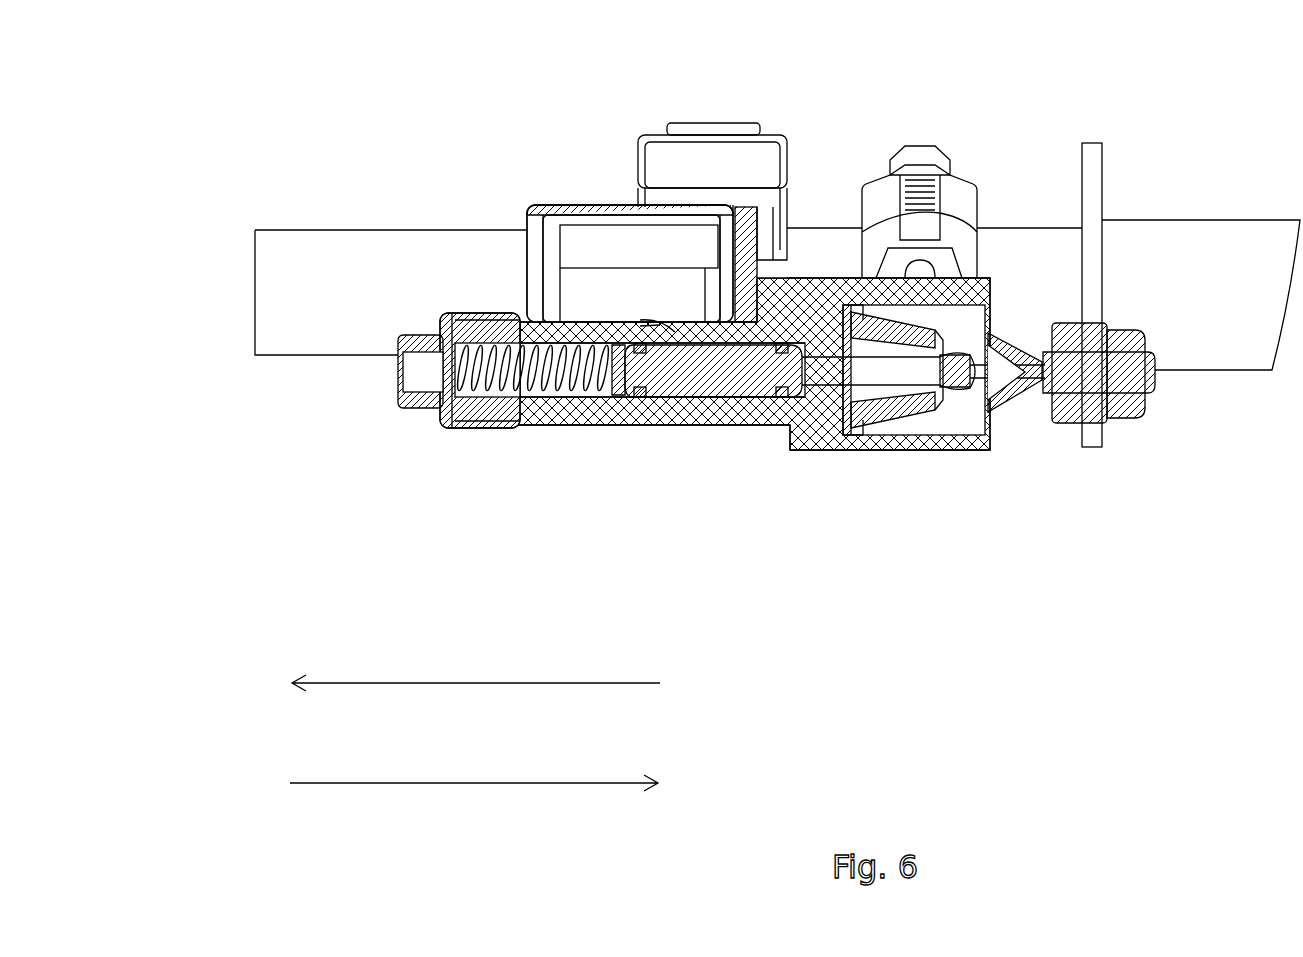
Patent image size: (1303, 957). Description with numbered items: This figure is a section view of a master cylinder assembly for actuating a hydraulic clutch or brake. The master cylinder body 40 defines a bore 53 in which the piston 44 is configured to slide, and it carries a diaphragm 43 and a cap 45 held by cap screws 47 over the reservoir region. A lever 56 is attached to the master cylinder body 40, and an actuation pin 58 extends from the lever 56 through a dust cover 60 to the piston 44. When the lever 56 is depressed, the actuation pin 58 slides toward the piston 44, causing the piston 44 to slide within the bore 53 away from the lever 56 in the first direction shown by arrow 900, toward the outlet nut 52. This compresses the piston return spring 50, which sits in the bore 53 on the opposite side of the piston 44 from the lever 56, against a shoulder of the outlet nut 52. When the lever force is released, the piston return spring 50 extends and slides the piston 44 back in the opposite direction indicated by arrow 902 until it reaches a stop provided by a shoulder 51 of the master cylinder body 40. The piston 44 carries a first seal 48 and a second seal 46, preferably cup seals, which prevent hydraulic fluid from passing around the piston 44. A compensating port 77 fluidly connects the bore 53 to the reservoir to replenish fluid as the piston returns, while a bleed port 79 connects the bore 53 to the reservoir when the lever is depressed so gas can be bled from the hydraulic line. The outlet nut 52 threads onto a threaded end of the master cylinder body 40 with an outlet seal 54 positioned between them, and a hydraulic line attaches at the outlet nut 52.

The master cylinder body 40 is at (578, 400).
The diaphragm 43 is at (643, 265).
The piston 44 is at (690, 372).
The cap 45 is at (553, 210).
The second seal 46 is at (643, 387).
The cap screws 47 is at (753, 212).
The first seal 48 is at (780, 390).
The piston return spring 50 is at (503, 400).
The shoulder 51 is at (842, 392).
The outlet nut 52 is at (418, 403).
The bore 53 is at (593, 388).
The outlet seal 54 is at (453, 408).
The lever 56 is at (1073, 422).
The actuation pin 58 is at (885, 383).
The dust cover 60 is at (900, 415).
The compensating port 77 is at (660, 325).
The bleed port 79 is at (675, 332).
The arrow 900 is at (476, 705).
The arrow 902 is at (474, 803).